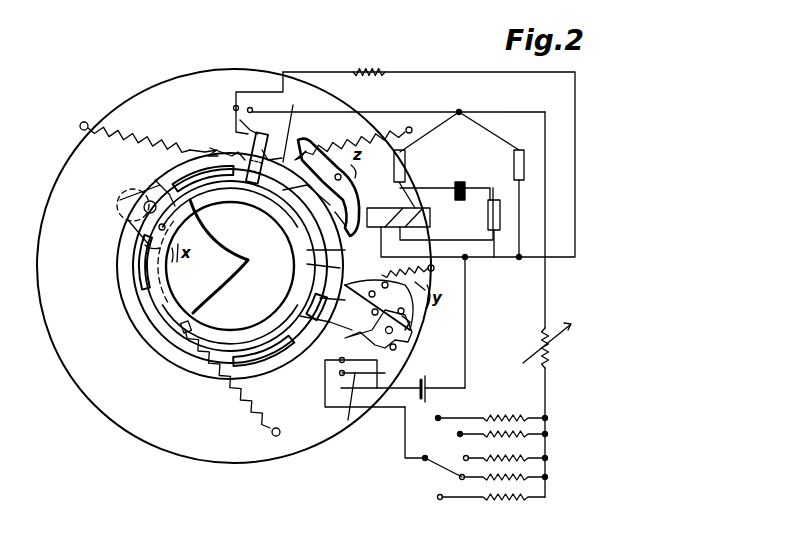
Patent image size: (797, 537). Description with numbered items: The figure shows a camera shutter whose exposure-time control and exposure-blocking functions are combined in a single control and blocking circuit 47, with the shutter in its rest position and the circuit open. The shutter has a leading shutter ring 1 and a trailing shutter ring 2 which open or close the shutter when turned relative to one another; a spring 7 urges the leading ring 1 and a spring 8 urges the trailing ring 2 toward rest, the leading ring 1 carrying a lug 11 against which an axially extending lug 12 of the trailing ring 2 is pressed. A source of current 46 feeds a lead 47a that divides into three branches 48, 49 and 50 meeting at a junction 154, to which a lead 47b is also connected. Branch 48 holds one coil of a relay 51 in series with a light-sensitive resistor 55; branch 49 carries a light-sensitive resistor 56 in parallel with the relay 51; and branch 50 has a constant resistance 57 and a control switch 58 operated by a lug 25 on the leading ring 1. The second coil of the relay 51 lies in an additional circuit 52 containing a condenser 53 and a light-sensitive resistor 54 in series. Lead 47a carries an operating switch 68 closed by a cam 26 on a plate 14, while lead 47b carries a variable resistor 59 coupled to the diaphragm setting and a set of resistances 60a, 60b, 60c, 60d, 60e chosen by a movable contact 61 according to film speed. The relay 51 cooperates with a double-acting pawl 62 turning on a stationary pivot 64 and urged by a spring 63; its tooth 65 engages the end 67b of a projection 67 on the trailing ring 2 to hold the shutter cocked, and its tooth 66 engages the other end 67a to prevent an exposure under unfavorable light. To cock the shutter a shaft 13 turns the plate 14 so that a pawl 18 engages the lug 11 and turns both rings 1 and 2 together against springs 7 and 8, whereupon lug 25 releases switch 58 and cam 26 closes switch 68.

The leading shutter ring 1 is at (203, 204).
The trailing shutter ring 2 is at (138, 314).
The spring 7 is at (232, 397).
The spring 8 is at (157, 128).
The lug 11 is at (320, 298).
The axially extending lug 12 is at (300, 316).
The shaft 13 is at (410, 329).
The plate 14 is at (408, 346).
The pawl 18 is at (360, 287).
The lug 25 is at (232, 150).
The cam 26 is at (340, 362).
The source of current 46 is at (431, 388).
The control and blocking circuit 47 is at (405, 432).
The lead 47a is at (470, 292).
The lead 47b is at (549, 293).
The branch 48 is at (404, 190).
The branch 49 is at (522, 197).
The branch 50 is at (577, 146).
The relay 51 is at (372, 224).
The additional circuit 52 is at (490, 190).
The condenser 53 is at (455, 184).
The light-sensitive resistor 54 is at (488, 220).
The light-sensitive resistor 55 is at (406, 166).
The light-sensitive resistor 56 is at (513, 168).
The constant resistance 57 is at (373, 70).
The control switch 58 is at (240, 120).
The variable resistor 59 is at (556, 349).
The resistance 60a is at (500, 412).
The resistance 60b is at (520, 434).
The resistance 60c is at (520, 458).
The resistance 60d is at (520, 477).
The resistance 60e is at (520, 497).
The movable contact 61 is at (430, 472).
The double-acting pawl 62 is at (307, 250).
The spring 63 is at (352, 138).
The stationary pivot 64 is at (283, 190).
The tooth 65 is at (309, 150).
The tooth 66 is at (307, 264).
The projection 67 is at (273, 123).
The end of projection 67a is at (335, 212).
The end of projection 67b is at (272, 130).
The operating switch 68 is at (350, 420).
The junction 154 is at (459, 112).